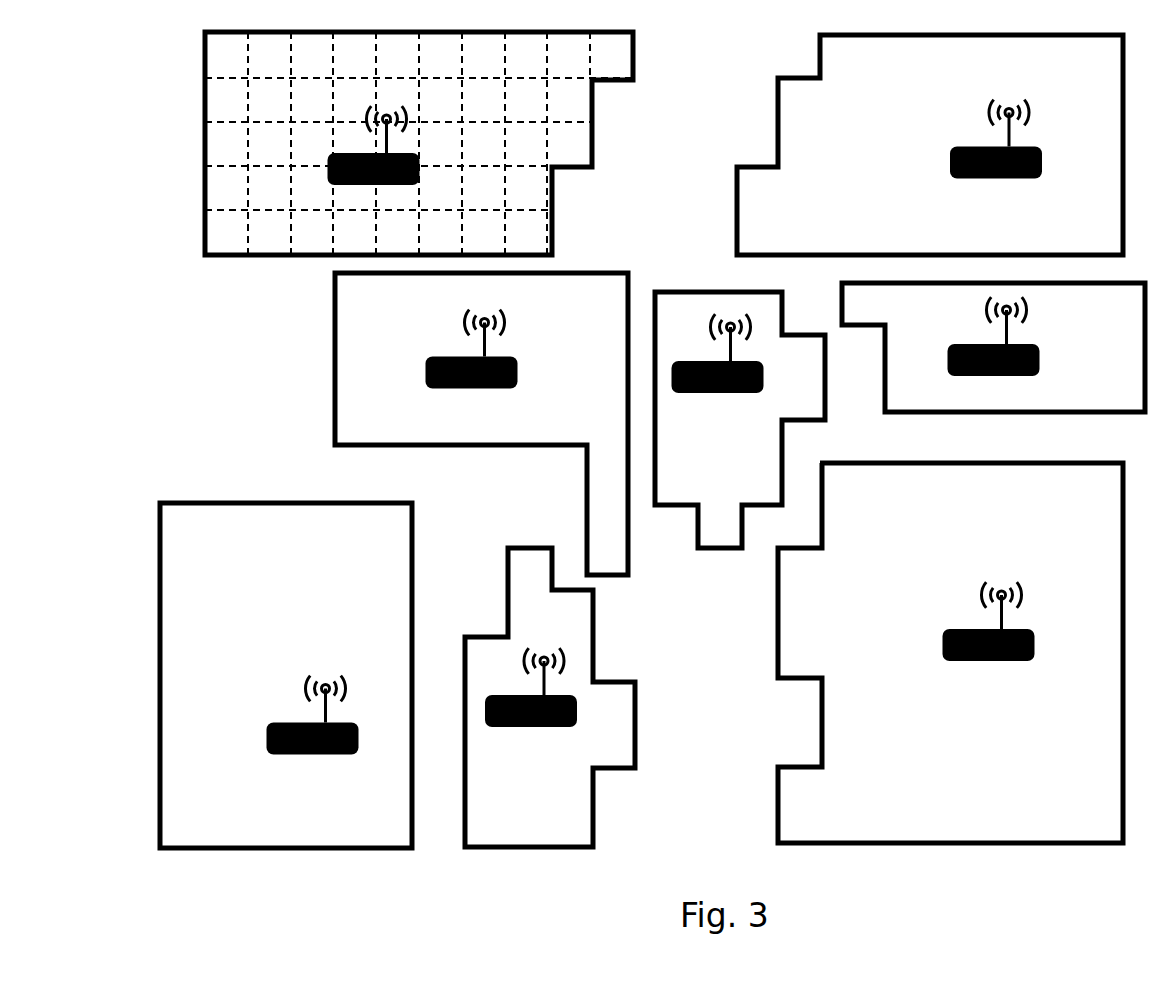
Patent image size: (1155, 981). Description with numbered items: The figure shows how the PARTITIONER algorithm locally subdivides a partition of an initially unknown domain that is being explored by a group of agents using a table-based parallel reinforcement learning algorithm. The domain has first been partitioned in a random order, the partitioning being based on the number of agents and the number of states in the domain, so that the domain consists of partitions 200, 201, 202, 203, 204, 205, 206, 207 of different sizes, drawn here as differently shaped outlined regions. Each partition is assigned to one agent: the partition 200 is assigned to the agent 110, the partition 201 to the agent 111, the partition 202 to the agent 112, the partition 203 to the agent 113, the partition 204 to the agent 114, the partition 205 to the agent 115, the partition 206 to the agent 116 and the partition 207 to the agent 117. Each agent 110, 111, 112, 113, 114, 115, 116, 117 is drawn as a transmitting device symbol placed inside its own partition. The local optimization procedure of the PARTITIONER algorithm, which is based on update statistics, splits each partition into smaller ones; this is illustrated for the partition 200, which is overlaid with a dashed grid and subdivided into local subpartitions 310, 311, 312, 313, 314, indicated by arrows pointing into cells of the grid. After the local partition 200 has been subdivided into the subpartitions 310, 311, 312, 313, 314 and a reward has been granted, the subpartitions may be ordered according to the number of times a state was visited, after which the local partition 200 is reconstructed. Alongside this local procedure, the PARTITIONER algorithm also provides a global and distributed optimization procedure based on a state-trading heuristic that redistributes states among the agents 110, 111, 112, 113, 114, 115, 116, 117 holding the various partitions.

The agent 110 is at (358, 152).
The agent 111 is at (484, 389).
The agent 112 is at (305, 757).
The agent 113 is at (1008, 180).
The agent 114 is at (978, 664).
The agent 115 is at (705, 393).
The agent 116 is at (1000, 378).
The agent 117 is at (542, 728).
The partition 200 is at (593, 150).
The partition 201 is at (335, 355).
The partition 202 is at (412, 538).
The partition 203 is at (737, 195).
The partition 204 is at (778, 660).
The partition 205 is at (782, 458).
The partition 206 is at (1005, 413).
The partition 207 is at (593, 640).
The subpartition 310 is at (610, 58).
The subpartition 311 is at (534, 233).
The subpartition 312 is at (222, 227).
The subpartition 313 is at (222, 153).
The subpartition 314 is at (216, 67).